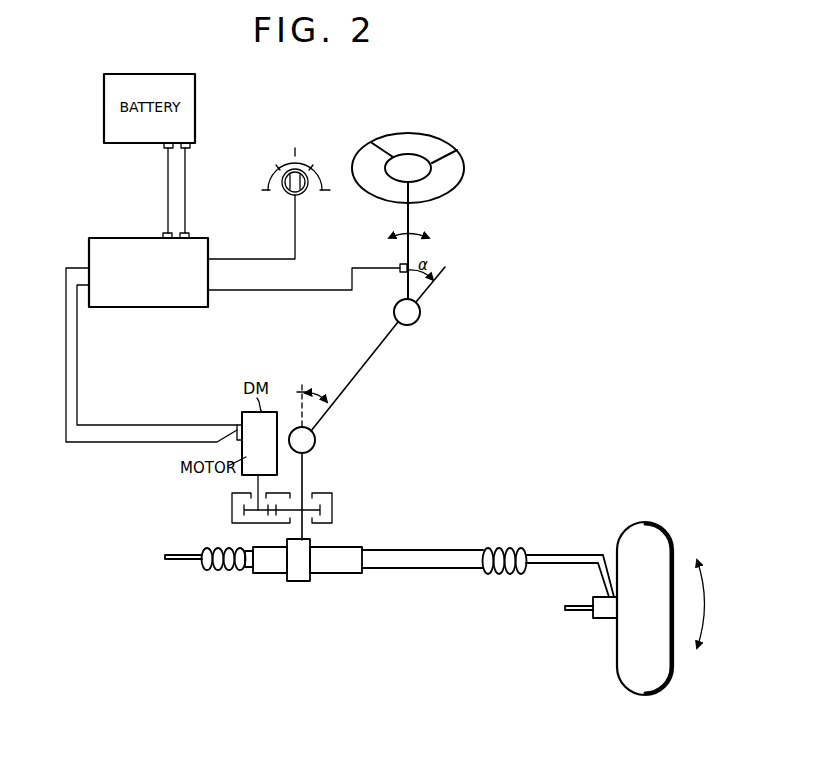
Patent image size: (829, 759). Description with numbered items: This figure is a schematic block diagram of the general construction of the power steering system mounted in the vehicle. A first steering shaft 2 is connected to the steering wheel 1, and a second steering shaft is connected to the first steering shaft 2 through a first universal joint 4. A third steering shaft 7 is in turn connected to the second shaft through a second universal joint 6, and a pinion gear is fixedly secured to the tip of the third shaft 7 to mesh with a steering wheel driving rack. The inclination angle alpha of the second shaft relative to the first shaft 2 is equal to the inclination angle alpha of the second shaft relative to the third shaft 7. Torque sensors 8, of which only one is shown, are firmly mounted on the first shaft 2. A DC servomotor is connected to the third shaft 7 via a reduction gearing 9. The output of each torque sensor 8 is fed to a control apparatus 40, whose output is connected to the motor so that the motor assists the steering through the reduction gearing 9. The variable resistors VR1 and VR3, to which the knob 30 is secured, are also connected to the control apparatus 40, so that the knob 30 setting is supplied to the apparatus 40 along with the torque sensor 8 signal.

The steering wheel 1 is at (465, 170).
The first steering shaft 2 is at (410, 228).
The first universal joint 4 is at (410, 325).
The second universal joint 6 is at (315, 441).
The third steering shaft 7 is at (304, 478).
The torque sensor 8 is at (398, 274).
The reduction gearing 9 is at (332, 512).
The knob 30 is at (305, 157).
The control apparatus 40 is at (150, 308).
The variable resistor VR1 is at (302, 193).
The variable resistor VR3 is at (301, 173).